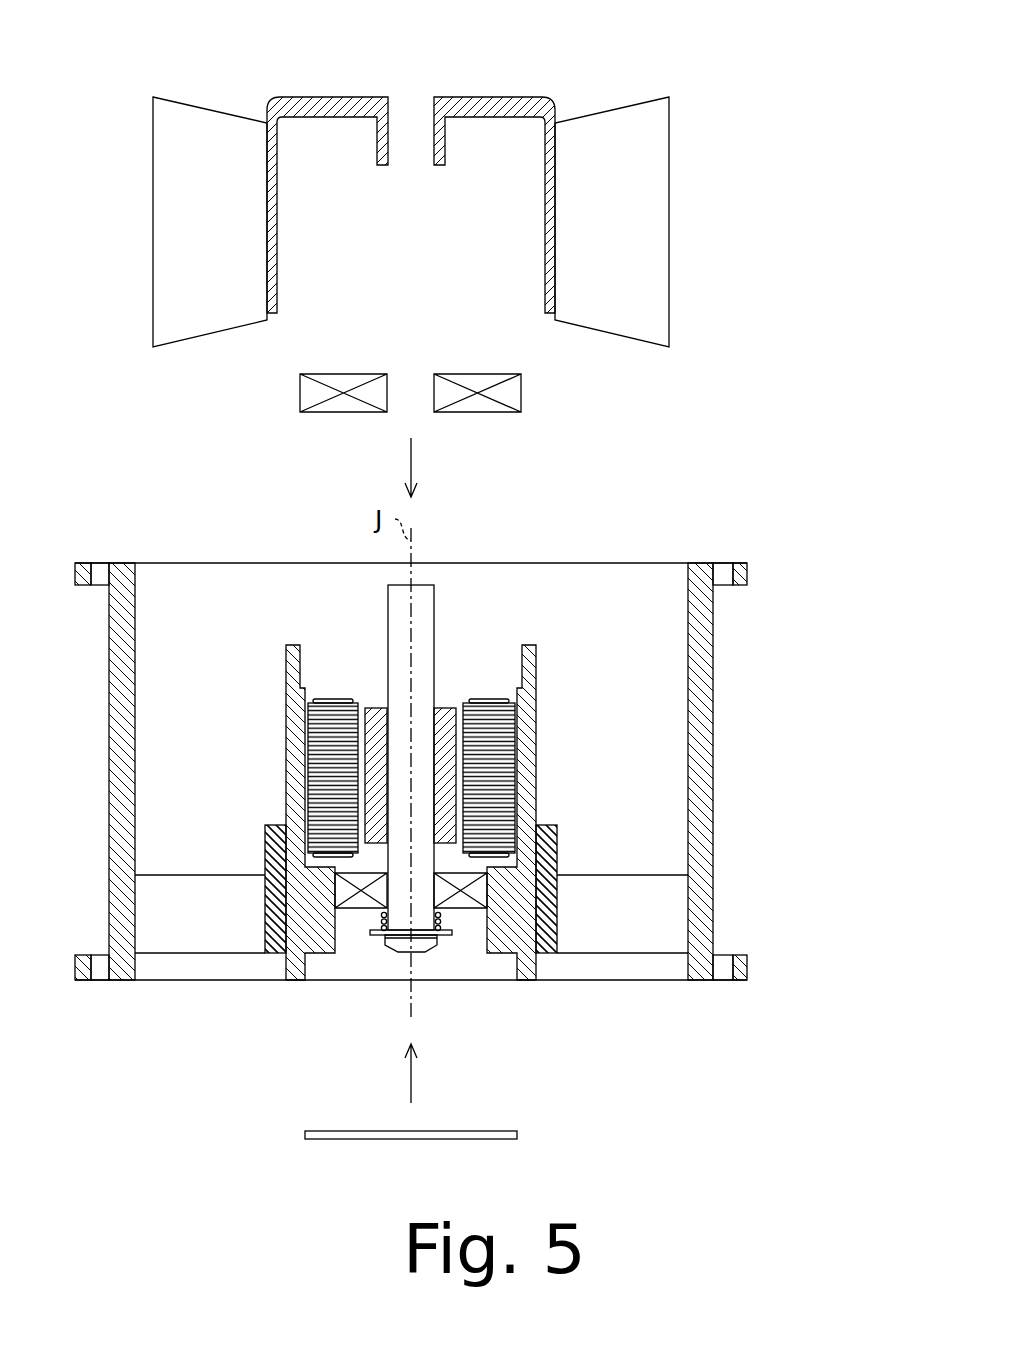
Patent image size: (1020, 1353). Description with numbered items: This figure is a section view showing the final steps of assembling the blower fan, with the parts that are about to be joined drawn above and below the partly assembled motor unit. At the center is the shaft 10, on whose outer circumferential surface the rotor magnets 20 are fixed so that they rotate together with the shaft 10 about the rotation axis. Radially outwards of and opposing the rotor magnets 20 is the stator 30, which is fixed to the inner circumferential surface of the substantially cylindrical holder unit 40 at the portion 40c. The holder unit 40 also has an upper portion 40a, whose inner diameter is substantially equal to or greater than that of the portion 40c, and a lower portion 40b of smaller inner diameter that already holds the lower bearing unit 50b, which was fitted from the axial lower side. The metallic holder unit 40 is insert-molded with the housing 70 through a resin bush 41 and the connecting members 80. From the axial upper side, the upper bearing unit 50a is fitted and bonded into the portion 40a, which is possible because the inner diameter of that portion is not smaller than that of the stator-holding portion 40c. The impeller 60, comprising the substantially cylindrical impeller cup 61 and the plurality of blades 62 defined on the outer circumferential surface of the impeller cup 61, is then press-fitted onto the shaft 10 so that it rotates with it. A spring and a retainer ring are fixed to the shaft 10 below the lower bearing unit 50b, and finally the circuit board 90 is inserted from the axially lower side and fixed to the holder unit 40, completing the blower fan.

The shaft 10 is at (424, 595).
The rotor magnets 20 is at (443, 830).
The stator 30 is at (492, 740).
The holder unit 40 is at (560, 812).
The portion of the holder unit arranged to hold the upper bearing unit 40a is at (528, 678).
The portion of the holder unit arranged to hold the lower bearing unit 40b is at (520, 907).
The portion of the holder unit arranged to hold the stator 40c is at (525, 768).
The resin bush 41 is at (553, 921).
The upper bearing unit 50a is at (313, 395).
The lower bearing unit 50b is at (355, 908).
The impeller 60 is at (411, 173).
The impeller cup 61 is at (518, 105).
The blades 62 is at (597, 145).
The housing 70 is at (700, 622).
The connecting members 80 is at (200, 928).
The circuit board 90 is at (488, 1131).